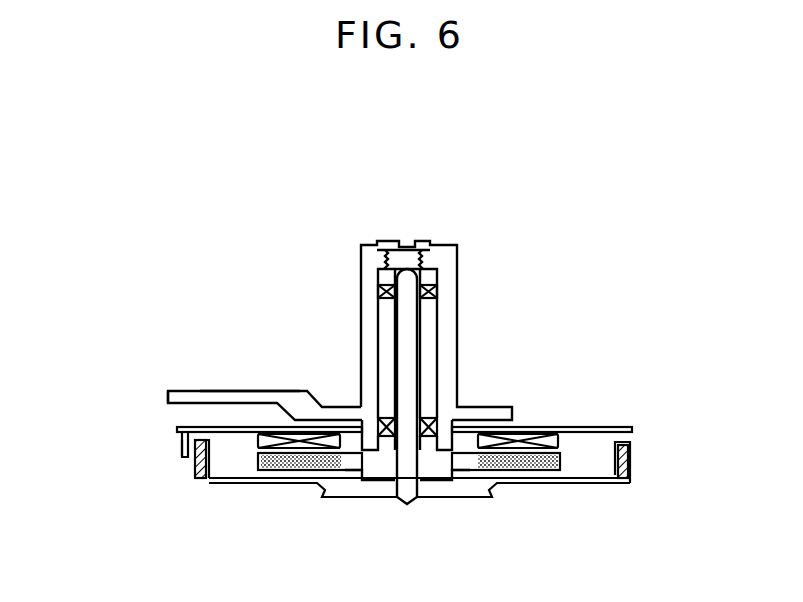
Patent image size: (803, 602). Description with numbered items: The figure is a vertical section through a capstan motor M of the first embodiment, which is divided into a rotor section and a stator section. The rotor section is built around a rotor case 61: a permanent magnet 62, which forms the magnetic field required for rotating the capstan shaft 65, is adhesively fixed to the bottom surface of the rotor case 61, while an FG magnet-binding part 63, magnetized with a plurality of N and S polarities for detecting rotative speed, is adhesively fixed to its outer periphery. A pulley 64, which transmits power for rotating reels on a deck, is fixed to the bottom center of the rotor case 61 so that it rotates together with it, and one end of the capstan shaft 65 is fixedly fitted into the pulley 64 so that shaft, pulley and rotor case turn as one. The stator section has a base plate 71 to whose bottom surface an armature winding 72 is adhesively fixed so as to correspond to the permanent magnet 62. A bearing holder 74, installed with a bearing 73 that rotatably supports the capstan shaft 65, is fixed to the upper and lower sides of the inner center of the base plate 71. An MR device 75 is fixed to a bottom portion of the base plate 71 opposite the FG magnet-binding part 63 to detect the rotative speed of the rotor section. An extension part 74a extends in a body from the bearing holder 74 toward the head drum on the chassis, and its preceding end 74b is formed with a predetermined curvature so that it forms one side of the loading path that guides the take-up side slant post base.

The rotor case 61 is at (601, 485).
The permanent magnet 62 is at (300, 471).
The FG magnet-binding part 63 is at (196, 470).
The pulley 64 is at (502, 485).
The capstan shaft 65 is at (407, 506).
The base plate 71 is at (607, 427).
The armature winding 72 is at (256, 441).
The bearing 73 is at (438, 286).
The bearing holder 74 is at (363, 312).
The extension part 74a is at (240, 390).
The preceding end 74b is at (169, 397).
The MR device 75 is at (182, 449).
The capstan motor M is at (462, 322).